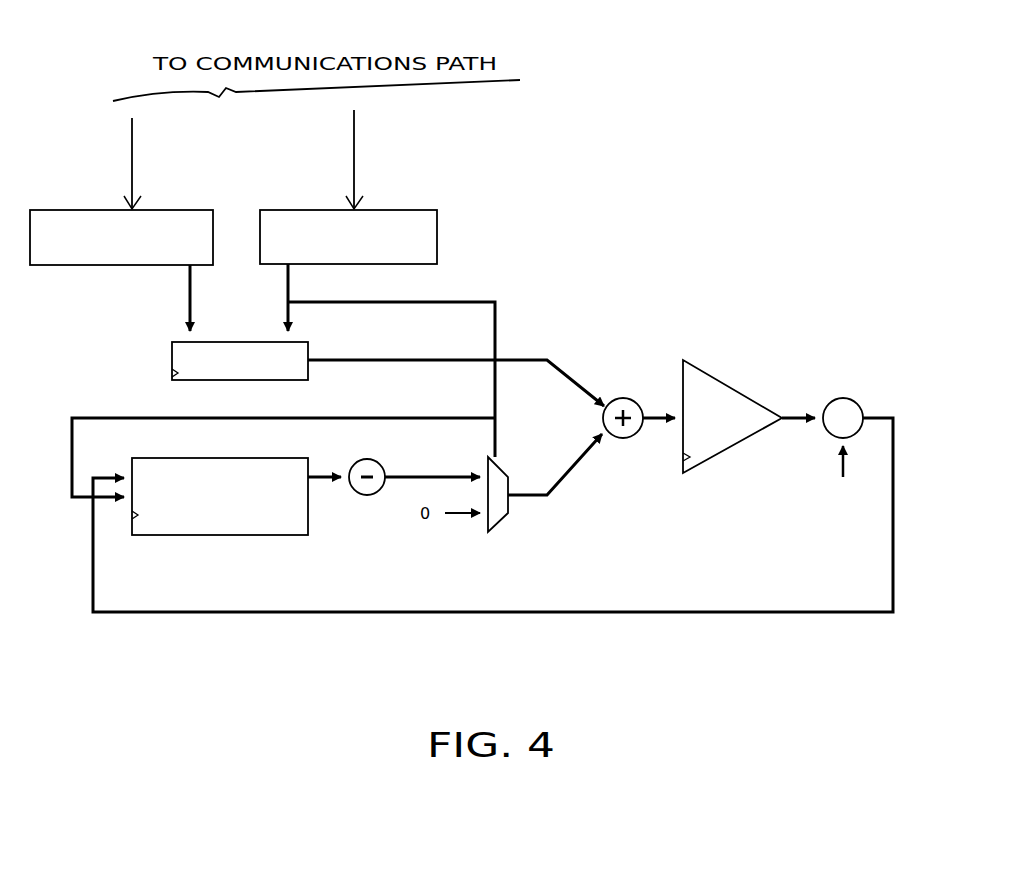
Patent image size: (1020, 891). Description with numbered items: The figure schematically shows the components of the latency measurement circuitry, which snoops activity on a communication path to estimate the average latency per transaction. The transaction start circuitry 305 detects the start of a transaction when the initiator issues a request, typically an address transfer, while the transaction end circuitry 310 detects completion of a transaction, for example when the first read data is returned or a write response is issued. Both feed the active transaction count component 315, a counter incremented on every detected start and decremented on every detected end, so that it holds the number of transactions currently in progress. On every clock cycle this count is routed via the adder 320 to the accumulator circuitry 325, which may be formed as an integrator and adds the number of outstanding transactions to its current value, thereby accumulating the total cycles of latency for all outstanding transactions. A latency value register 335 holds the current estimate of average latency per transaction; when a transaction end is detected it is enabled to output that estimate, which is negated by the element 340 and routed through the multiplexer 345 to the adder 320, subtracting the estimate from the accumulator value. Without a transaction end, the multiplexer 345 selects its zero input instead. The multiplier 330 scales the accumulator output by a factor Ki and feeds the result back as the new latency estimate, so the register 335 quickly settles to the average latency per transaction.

The transaction start circuitry 305 is at (165, 207).
The transaction end circuitry 310 is at (400, 207).
The active transaction count component 315 is at (243, 331).
The adder 320 is at (630, 386).
The accumulator circuitry 325 is at (725, 384).
The multiplier 330 is at (853, 398).
The latency value register 335 is at (233, 537).
The negating element 340 is at (377, 461).
The multiplexer 345 is at (500, 525).